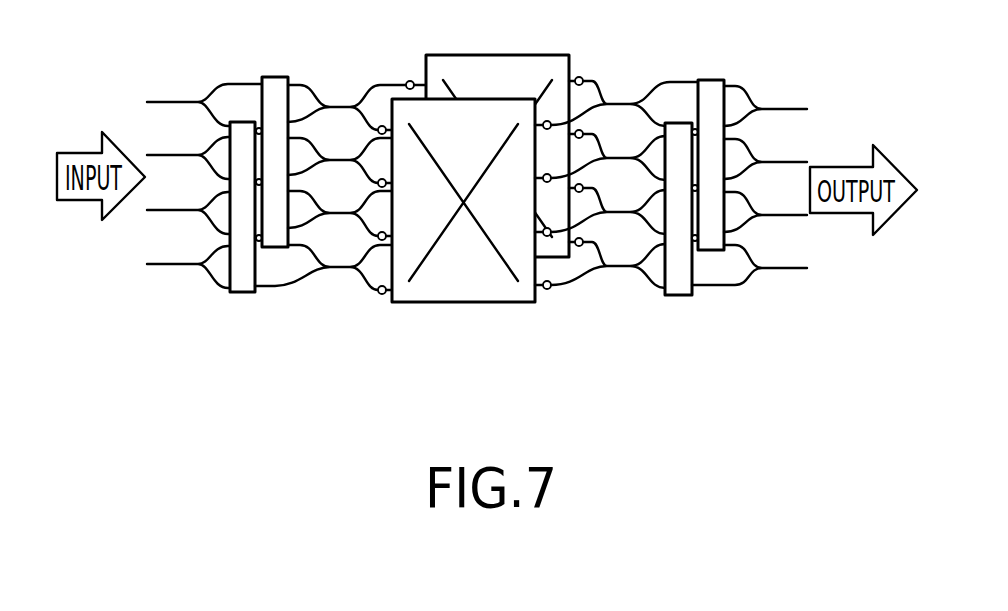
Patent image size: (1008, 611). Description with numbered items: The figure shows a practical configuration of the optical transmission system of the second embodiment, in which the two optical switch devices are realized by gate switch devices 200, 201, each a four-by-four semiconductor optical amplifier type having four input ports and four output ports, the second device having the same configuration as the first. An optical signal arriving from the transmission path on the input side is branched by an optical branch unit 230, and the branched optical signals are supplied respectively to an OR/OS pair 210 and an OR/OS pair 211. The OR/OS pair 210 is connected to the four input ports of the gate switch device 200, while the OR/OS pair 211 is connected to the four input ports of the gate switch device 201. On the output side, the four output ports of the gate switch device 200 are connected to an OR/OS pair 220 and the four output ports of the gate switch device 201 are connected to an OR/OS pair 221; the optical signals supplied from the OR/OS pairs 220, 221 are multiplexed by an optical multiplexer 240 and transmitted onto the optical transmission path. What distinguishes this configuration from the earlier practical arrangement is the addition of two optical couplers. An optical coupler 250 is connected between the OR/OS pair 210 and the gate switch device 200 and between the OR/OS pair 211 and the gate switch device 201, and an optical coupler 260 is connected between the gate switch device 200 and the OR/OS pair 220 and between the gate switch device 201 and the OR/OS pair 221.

The gate switch device 200 is at (455, 303).
The gate switch device 201 is at (470, 55).
The OR/OS pair 210 is at (245, 293).
The OR/OS pair 211 is at (277, 77).
The OR/OS pair 220 is at (682, 296).
The OR/OS pair 221 is at (712, 80).
The optical branch unit 230 is at (198, 102).
The optical multiplexer 240 is at (763, 108).
The optical coupler 250 is at (325, 268).
The optical coupler 260 is at (620, 268).